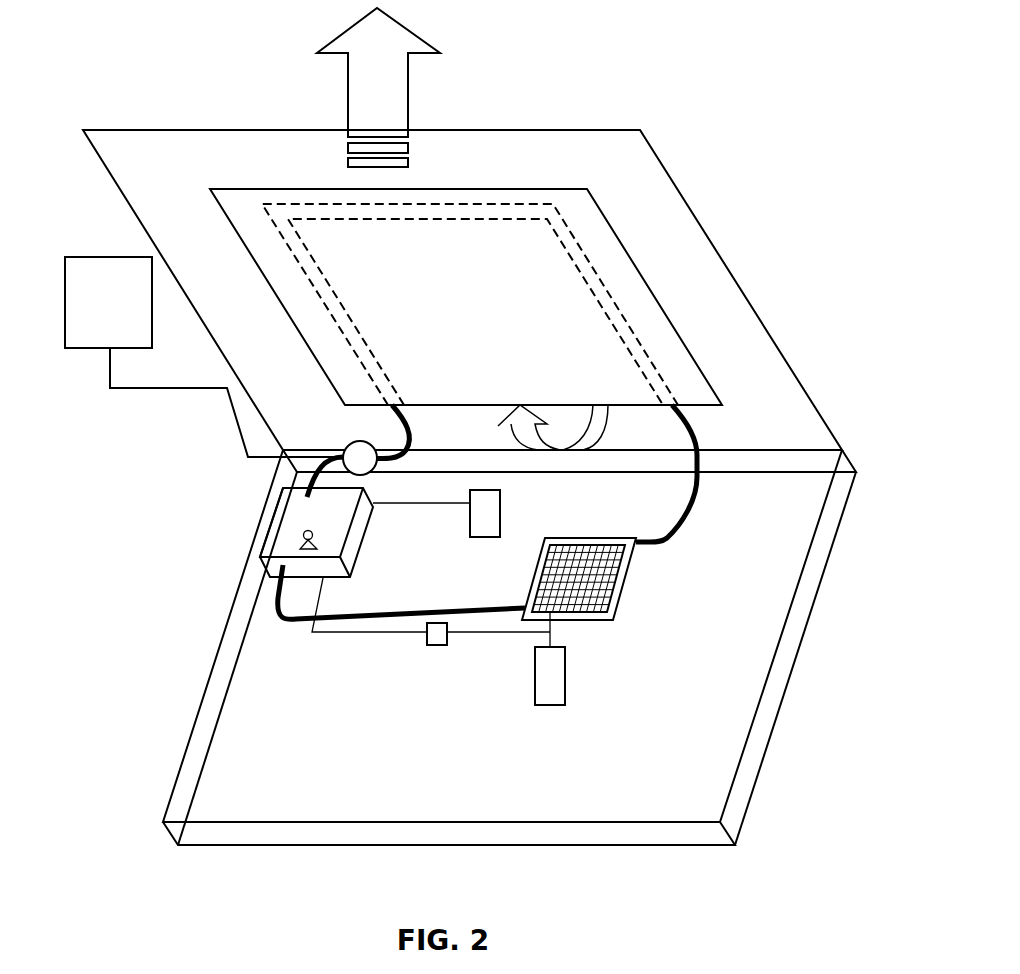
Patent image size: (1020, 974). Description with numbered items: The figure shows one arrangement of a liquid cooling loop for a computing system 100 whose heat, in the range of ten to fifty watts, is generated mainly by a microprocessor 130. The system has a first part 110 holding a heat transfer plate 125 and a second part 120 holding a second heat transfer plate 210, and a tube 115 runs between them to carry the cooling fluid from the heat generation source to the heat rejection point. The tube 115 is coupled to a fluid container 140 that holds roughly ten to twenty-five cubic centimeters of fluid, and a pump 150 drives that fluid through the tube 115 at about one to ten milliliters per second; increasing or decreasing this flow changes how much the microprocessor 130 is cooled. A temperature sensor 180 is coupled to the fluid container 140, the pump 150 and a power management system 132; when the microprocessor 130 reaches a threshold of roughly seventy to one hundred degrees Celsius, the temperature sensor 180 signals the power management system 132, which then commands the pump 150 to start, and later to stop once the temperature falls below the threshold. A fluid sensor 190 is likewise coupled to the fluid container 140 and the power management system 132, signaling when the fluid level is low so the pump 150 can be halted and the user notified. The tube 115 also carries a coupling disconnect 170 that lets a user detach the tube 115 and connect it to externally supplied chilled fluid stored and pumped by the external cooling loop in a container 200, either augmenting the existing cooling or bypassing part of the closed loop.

The computing system 100 is at (666, 86).
The first part 110 is at (761, 738).
The tube 115 is at (613, 300).
The second part 120 is at (643, 153).
The heat transfer plate 125 is at (527, 585).
The microprocessor 130 is at (620, 601).
The power management system 132 is at (433, 645).
The fluid container 140 is at (303, 518).
The pump 150 is at (295, 535).
The coupling disconnect 170 is at (309, 455).
The temperature sensor 180 is at (565, 680).
The fluid sensor 190 is at (500, 498).
The container 200 is at (204, 357).
The heat transfer plate 210 is at (560, 262).